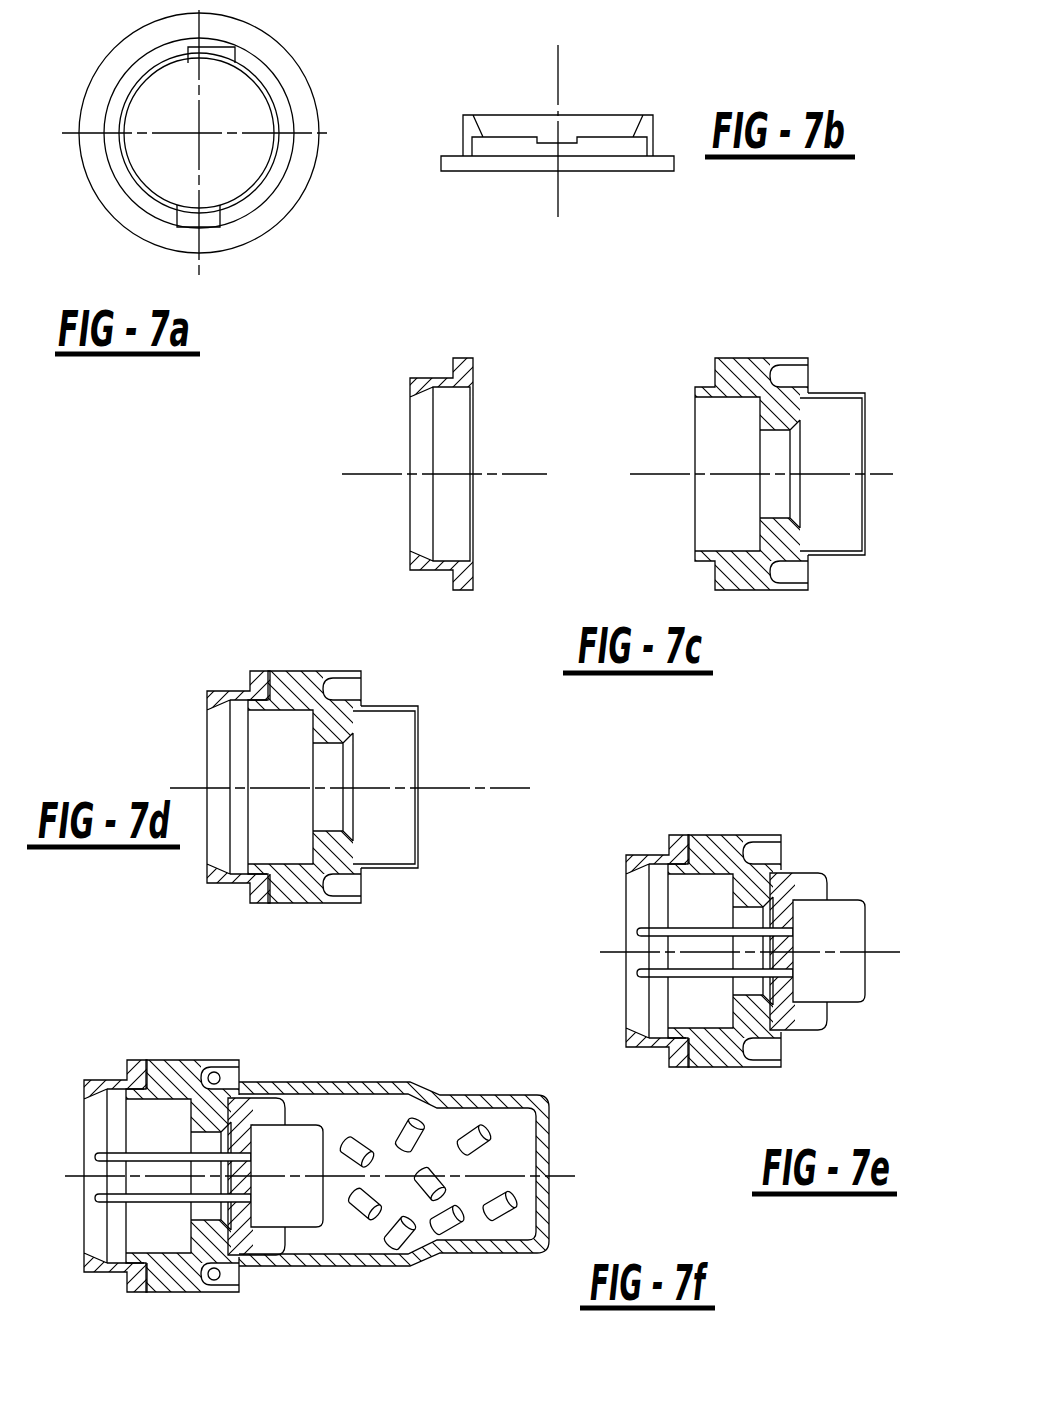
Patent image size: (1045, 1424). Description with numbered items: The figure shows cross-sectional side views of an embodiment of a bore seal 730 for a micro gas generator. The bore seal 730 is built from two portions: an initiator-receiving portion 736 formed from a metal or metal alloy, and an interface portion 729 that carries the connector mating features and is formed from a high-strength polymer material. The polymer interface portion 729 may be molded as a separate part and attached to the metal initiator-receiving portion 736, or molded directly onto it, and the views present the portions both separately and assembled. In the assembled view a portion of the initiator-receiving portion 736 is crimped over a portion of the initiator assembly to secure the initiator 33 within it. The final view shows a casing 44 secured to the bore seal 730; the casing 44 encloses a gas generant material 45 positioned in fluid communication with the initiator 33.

In FIG. 7E, the initiator 33 is at (845, 918).
In FIG. 7F, the initiator 33 is at (304, 1138).
In FIG. 7F, the casing 44 is at (366, 1082).
In FIG. 7F, the gas generant material 45 is at (402, 1236).
In FIG. 7C, the interface portion 729 is at (410, 378).
In FIG. 7D, the interface portion 729 is at (218, 693).
In FIG. 7E, the interface portion 729 is at (708, 1070).
In FIG. 7F, the interface portion 729 is at (115, 1176).
In FIG. 7C, the bore seal 730 is at (582, 423).
In FIG. 7D, the bore seal 730 is at (272, 776).
In FIG. 7E, the bore seal 730 is at (726, 993).
In FIG. 7F, the bore seal 730 is at (184, 1218).
In FIG. 7C, the initiator-receiving portion 736 is at (780, 423).
In FIG. 7D, the initiator-receiving portion 736 is at (300, 695).
In FIG. 7E, the initiator-receiving portion 736 is at (724, 951).
In FIG. 7F, the initiator-receiving portion 736 is at (182, 1176).